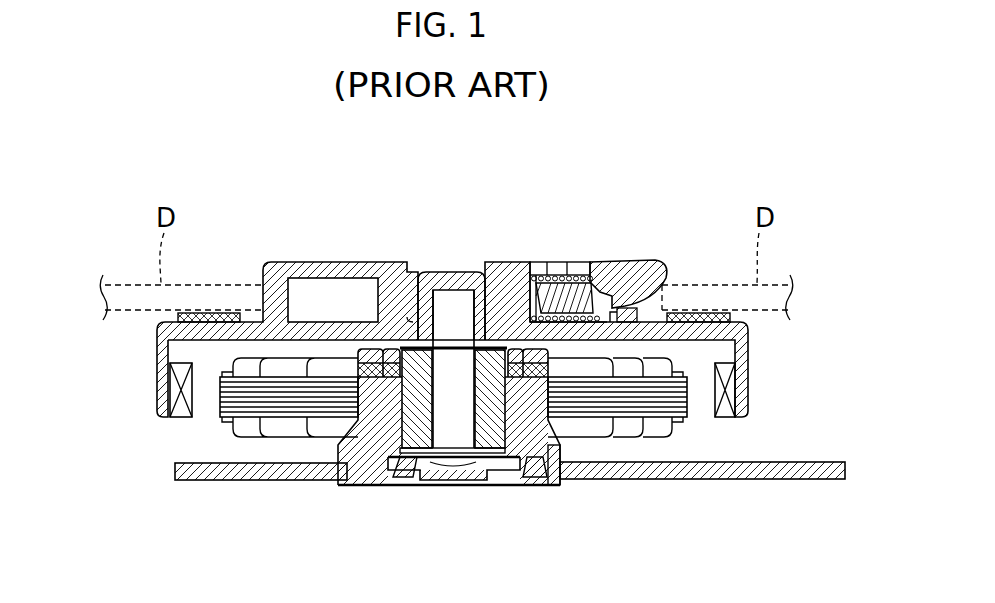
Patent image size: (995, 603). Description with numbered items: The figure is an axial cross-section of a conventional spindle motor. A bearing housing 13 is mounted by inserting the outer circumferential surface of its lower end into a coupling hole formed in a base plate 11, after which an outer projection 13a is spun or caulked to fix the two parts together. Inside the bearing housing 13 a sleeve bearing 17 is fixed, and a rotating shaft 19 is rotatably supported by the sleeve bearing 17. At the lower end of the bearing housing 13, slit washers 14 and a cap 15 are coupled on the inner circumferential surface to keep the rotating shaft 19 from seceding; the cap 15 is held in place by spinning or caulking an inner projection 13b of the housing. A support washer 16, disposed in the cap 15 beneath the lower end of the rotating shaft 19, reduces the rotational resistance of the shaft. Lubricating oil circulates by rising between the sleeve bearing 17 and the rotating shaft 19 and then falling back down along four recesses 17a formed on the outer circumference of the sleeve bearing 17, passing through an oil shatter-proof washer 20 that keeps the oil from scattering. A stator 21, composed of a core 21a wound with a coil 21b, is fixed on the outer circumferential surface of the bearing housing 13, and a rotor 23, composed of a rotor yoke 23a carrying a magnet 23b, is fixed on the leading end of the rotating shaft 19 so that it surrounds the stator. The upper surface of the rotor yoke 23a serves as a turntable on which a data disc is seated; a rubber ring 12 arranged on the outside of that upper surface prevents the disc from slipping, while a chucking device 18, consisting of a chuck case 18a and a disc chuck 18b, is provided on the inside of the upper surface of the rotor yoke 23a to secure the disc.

The base plate 11 is at (225, 475).
The rubber ring 12 is at (698, 313).
The bearing housing 13 is at (479, 451).
The outer projection 13a is at (557, 462).
The inner projection 13b is at (515, 465).
The slit washers 14 is at (408, 460).
The cap 15 is at (482, 465).
The support washer 16 is at (433, 463).
The sleeve bearing 17 is at (385, 368).
The recesses 17a is at (398, 410).
The chucking device 18 is at (589, 226).
The chuck case 18a is at (517, 267).
The disc chuck 18b is at (617, 267).
The rotating shaft 19 is at (462, 297).
The oil shatter-proof washer 20 is at (413, 313).
The stator 21 is at (545, 390).
The core 21a is at (675, 402).
The coil 21b is at (660, 365).
The rotor 23 is at (101, 370).
The rotor yoke 23a is at (163, 360).
The magnet 23b is at (180, 390).